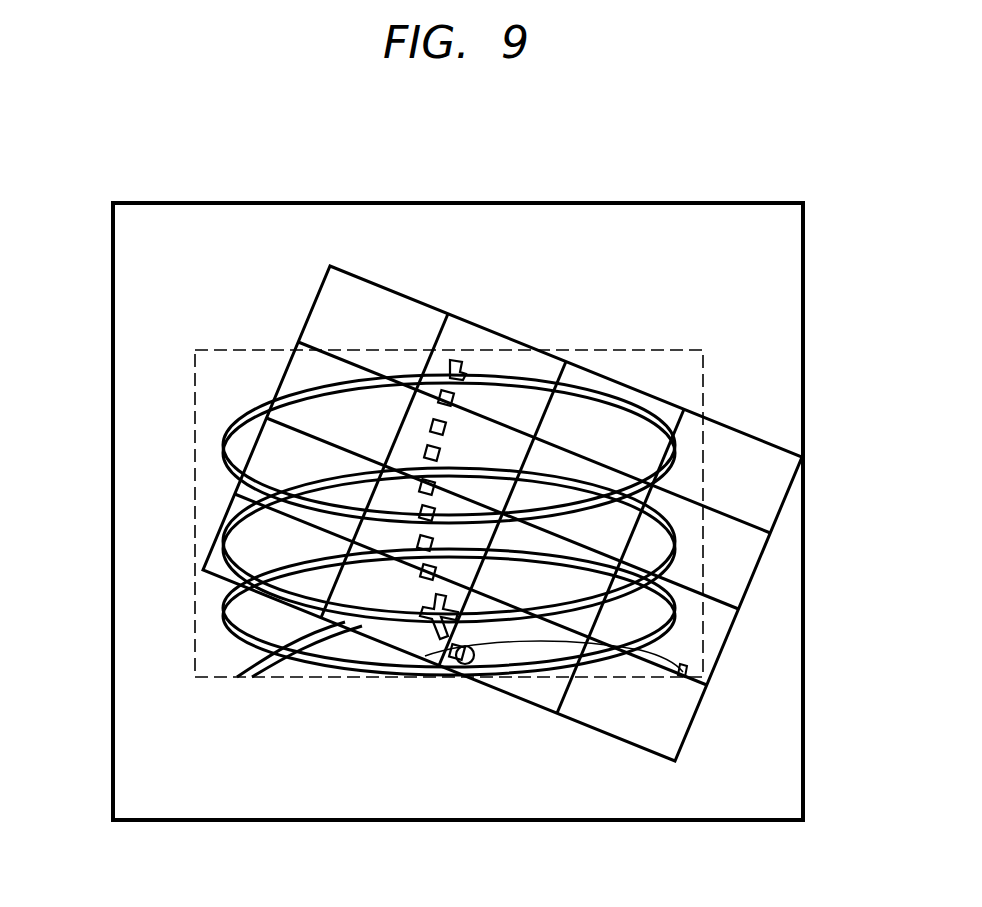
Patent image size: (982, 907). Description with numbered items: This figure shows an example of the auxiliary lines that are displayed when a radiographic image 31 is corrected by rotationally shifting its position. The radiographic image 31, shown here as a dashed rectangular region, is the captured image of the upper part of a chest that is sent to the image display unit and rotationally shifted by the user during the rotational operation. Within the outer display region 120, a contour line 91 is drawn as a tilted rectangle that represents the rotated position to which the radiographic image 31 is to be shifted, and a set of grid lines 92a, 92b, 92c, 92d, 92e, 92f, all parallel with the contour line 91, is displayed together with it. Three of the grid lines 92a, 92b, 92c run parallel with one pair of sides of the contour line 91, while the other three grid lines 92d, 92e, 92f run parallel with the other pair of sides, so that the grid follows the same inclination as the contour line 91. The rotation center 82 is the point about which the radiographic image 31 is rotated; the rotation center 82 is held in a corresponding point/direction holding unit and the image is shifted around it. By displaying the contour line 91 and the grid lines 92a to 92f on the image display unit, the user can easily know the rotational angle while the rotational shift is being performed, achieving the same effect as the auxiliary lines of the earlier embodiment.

The display screen 120 is at (712, 202).
The radiographic image 31 is at (594, 348).
The rotation center 82 is at (709, 672).
The contour line 91 is at (461, 426).
The grid line 92a is at (436, 330).
The grid line 92b is at (600, 375).
The grid line 92c is at (676, 428).
The grid line 92d is at (330, 361).
The grid line 92e is at (300, 433).
The grid line 92f is at (285, 506).